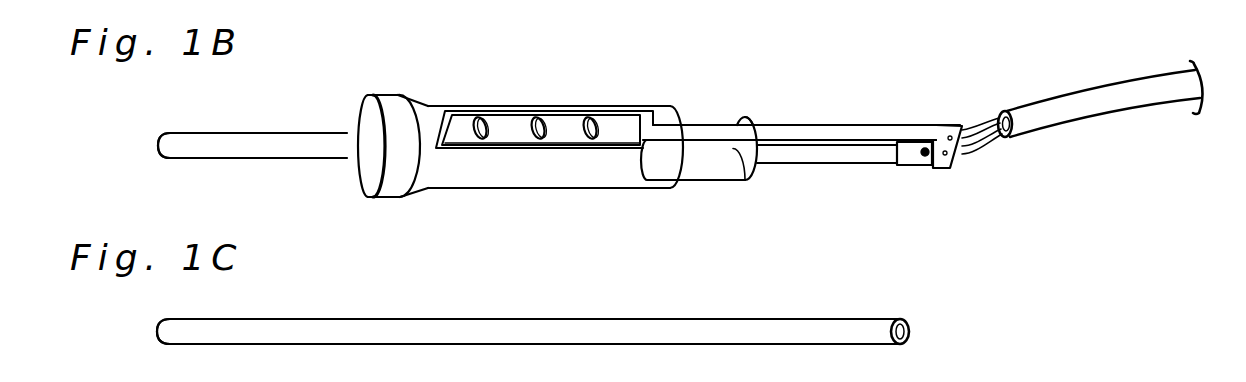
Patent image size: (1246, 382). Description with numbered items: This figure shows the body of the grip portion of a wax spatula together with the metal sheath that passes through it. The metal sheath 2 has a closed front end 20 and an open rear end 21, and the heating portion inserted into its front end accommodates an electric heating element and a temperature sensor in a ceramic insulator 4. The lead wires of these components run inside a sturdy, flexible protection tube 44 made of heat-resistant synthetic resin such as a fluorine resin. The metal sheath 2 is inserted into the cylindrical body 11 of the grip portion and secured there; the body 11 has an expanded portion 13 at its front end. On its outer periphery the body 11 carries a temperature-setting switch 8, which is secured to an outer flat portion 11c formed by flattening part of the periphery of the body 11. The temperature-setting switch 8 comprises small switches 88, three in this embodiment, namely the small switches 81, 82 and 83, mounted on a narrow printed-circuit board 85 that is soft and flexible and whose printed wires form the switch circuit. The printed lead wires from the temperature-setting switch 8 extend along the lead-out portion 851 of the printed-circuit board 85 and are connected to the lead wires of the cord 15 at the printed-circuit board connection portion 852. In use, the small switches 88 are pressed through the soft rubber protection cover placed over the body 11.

In FIG. 1B, the metal sheath 2 is at (302, 138).
In FIG. 1C, the metal sheath 2 is at (448, 326).
In FIG. 1B, the ceramic insulator 4 is at (197, 137).
In FIG. 1B, the temperature-setting switch 8 is at (447, 42).
In FIG. 1B, the body 11 is at (520, 173).
In FIG. 1B, the outer flat portion 11c is at (453, 152).
In FIG. 1B, the expanded portion 13 is at (371, 97).
In FIG. 1B, the cord 15 is at (1113, 102).
In FIG. 1B, the closed front end 20 is at (159, 147).
In FIG. 1C, the closed front end 20 is at (157, 326).
In FIG. 1C, the open rear end 21 is at (912, 334).
In FIG. 1B, the protection tube 44 is at (915, 158).
In FIG. 1B, the small switch 81 is at (495, 113).
In FIG. 1B, the small switch 82 is at (557, 118).
In FIG. 1B, the small switch 83 is at (613, 118).
In FIG. 1B, the printed-circuit board 85 is at (623, 140).
In FIG. 1B, the small switches 88 is at (547, 147).
In FIG. 1B, the lead-out portion 851 is at (828, 132).
In FIG. 1B, the printed-circuit board connection portion 852 is at (942, 168).